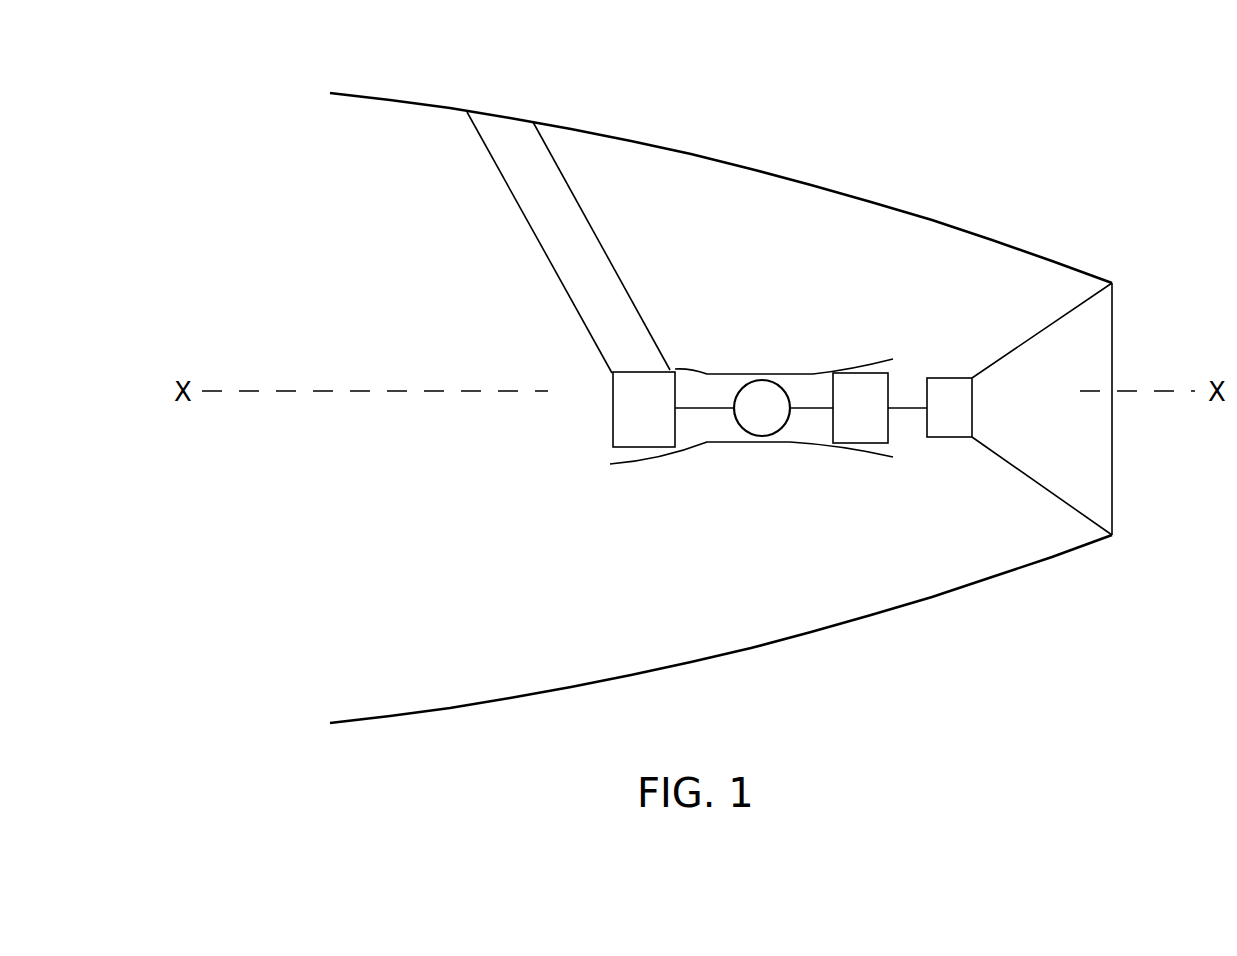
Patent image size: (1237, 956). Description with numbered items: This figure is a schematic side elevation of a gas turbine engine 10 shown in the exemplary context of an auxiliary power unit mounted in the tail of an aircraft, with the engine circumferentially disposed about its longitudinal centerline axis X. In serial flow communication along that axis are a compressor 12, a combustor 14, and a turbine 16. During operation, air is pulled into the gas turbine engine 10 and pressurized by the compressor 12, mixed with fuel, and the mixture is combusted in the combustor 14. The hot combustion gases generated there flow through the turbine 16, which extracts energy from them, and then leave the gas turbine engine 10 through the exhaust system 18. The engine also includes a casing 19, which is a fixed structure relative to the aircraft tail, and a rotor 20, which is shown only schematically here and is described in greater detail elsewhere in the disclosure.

The gas turbine engine 10 is at (716, 256).
The compressor 12 is at (655, 382).
The combustor 14 is at (755, 388).
The turbine 16 is at (858, 375).
The exhaust system 18 is at (940, 378).
The casing 19 is at (790, 433).
The rotor 20 is at (705, 408).